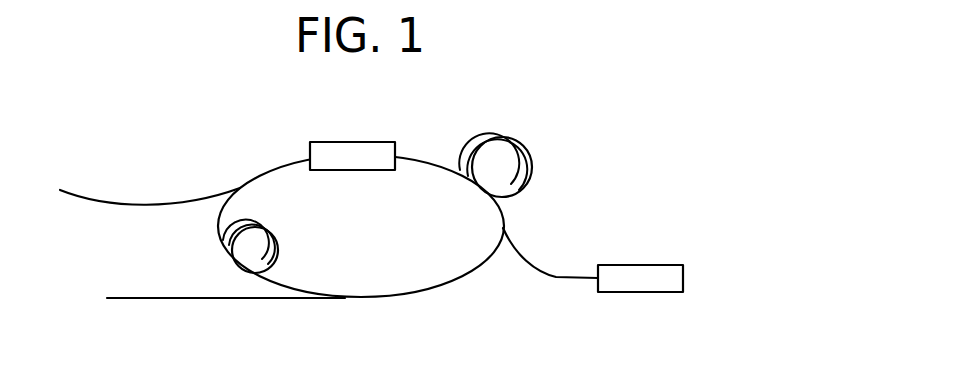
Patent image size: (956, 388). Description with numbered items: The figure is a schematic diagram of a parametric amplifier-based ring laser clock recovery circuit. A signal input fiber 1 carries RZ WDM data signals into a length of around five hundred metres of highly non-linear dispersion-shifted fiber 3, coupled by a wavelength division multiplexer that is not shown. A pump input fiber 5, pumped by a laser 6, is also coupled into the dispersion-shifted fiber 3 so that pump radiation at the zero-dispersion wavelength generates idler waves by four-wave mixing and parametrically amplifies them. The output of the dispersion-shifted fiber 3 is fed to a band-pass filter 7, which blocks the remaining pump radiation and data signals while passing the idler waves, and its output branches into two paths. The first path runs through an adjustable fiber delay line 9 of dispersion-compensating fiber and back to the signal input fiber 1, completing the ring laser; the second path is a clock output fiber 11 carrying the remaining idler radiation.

The signal input fiber 1 is at (172, 300).
The highly non-linear dispersion-shifted fiber 3 is at (532, 158).
The pump input fiber 5 is at (547, 272).
The laser 6 is at (640, 293).
The band-pass filter 7 is at (355, 142).
The adjustable fiber delay line 9 is at (222, 247).
The clock output fiber 11 is at (93, 198).